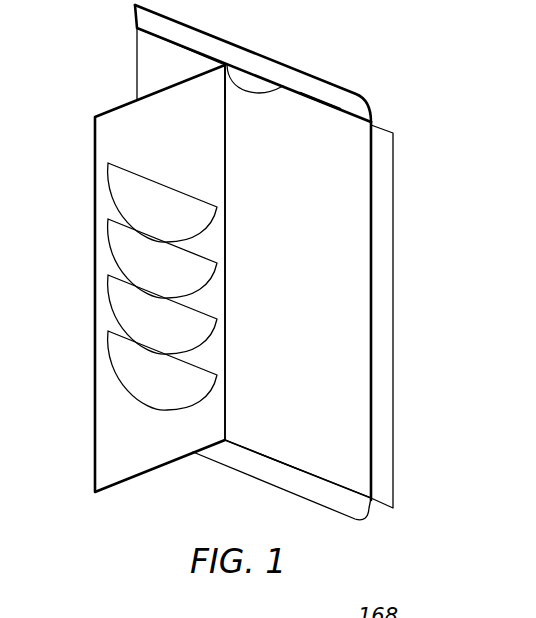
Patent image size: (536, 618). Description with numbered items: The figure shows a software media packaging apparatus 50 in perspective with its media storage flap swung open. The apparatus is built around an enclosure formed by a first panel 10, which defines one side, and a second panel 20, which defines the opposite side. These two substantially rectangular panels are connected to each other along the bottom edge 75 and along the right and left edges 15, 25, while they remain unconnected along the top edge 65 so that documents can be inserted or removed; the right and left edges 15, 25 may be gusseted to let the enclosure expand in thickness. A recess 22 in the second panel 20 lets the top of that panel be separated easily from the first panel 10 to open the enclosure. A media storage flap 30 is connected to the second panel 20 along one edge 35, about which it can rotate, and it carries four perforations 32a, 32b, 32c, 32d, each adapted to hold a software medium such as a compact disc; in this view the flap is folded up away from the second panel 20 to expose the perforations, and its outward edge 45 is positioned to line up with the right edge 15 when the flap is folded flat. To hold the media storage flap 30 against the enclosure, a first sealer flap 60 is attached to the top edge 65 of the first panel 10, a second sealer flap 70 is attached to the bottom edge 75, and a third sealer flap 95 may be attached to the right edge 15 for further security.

The first panel 10 is at (419, 229).
The right edge 15 is at (369, 362).
The second panel 20 is at (305, 241).
The recess 22 is at (270, 98).
The left edge 25 is at (135, 62).
The media storage flap 30 is at (205, 115).
The perforation 32a is at (151, 178).
The perforation 32b is at (151, 233).
The perforation 32c is at (151, 289).
The perforation 32d is at (152, 344).
The edge 35 is at (225, 302).
The outward edge 45 is at (95, 267).
The software media packaging apparatus 50 is at (364, 58).
The first sealer flap 60 is at (283, 78).
The top edge 65 is at (333, 110).
The second sealer flap 70 is at (265, 468).
The bottom edge 75 is at (277, 458).
The third sealer flap 95 is at (393, 438).